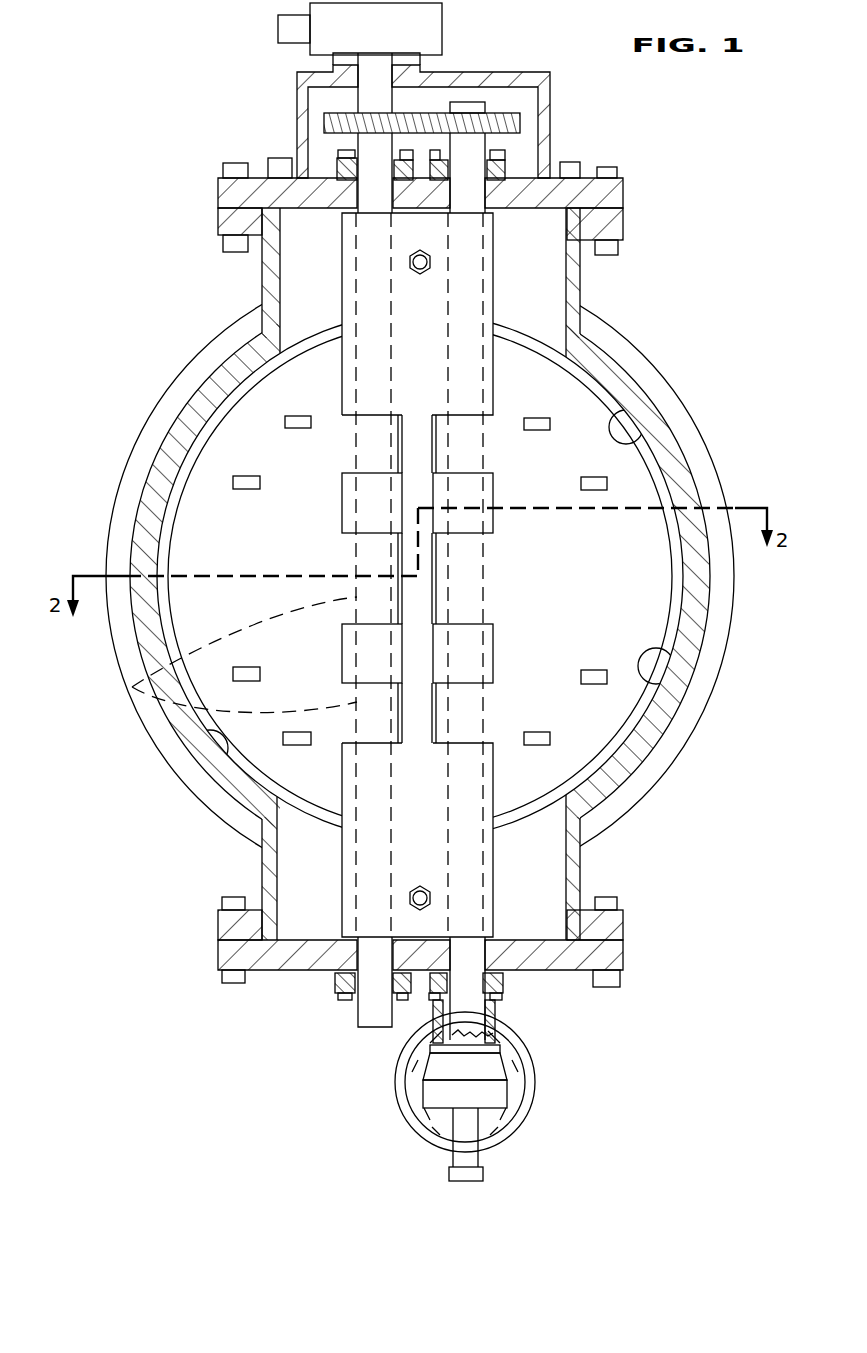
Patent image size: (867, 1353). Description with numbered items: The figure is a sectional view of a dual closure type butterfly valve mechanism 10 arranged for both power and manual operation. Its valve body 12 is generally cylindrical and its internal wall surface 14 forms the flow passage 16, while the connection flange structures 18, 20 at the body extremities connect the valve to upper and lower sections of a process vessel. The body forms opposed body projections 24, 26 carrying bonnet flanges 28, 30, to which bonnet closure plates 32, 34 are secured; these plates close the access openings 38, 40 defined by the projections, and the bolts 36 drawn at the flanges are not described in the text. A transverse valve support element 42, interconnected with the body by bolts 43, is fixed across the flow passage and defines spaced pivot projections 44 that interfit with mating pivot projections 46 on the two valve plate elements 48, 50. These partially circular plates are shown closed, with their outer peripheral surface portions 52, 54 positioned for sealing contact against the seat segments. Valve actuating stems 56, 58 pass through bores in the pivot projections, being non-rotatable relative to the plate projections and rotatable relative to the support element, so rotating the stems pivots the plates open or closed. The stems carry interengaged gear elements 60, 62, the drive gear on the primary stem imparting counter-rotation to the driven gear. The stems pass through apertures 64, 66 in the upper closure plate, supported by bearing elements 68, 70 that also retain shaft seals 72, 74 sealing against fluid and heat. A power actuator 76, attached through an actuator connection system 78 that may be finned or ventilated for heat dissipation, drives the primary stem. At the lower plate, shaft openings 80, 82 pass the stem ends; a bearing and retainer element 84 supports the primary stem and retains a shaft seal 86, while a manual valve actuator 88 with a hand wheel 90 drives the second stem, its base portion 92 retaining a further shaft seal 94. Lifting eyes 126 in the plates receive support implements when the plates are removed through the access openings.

The dual closure type butterfly valve mechanism 10 is at (436, 576).
The valve body 12 is at (688, 460).
The internal wall surface 14 is at (638, 444).
The flow passage 16 is at (193, 545).
The connection flange structure 18 is at (448, 576).
The connection flange structure 20 is at (685, 751).
The body projection 24 is at (262, 262).
The body projection 26 is at (262, 857).
The bonnet flange 28 is at (297, 218).
The bonnet flange 30 is at (217, 925).
The bonnet closure plate 32 is at (218, 190).
The bonnet closure plate 34 is at (217, 955).
The bolts 36 is at (225, 167).
The access opening 38 is at (262, 243).
The access opening 40 is at (298, 930).
The valve support element 42 is at (493, 917).
The bolts 43 is at (420, 276).
The pivot projections 44 is at (493, 638).
The mating pivot projections 46 is at (140, 687).
The valve plate element 48 is at (280, 557).
The valve plate element 50 is at (628, 621).
The outer peripheral surface portion 52 is at (226, 722).
The outer peripheral surface portion 54 is at (673, 652).
The valve actuating stem 56 is at (445, 1005).
The valve actuating stem 58 is at (470, 997).
The drive gear 60 is at (325, 117).
The driven gear 62 is at (520, 125).
The aperture 64 is at (383, 205).
The aperture 66 is at (482, 197).
The bearing element 68 is at (337, 163).
The bearing element 70 is at (503, 165).
The shaft seal 72 is at (357, 165).
The shaft seal 74 is at (540, 208).
The power actuator 76 is at (442, 24).
The actuator connection system 78 is at (517, 72).
The shaft opening 80 is at (353, 948).
The shaft opening 82 is at (478, 960).
The bearing and retainer element 84 is at (340, 985).
The shaft seal 86 is at (366, 1000).
The manual valve actuator 88 is at (507, 1090).
The actuator hand wheel 90 is at (505, 1142).
The base portion 92 is at (503, 985).
The shaft seal 94 is at (433, 1000).
The lifting eyes 126 is at (583, 452).